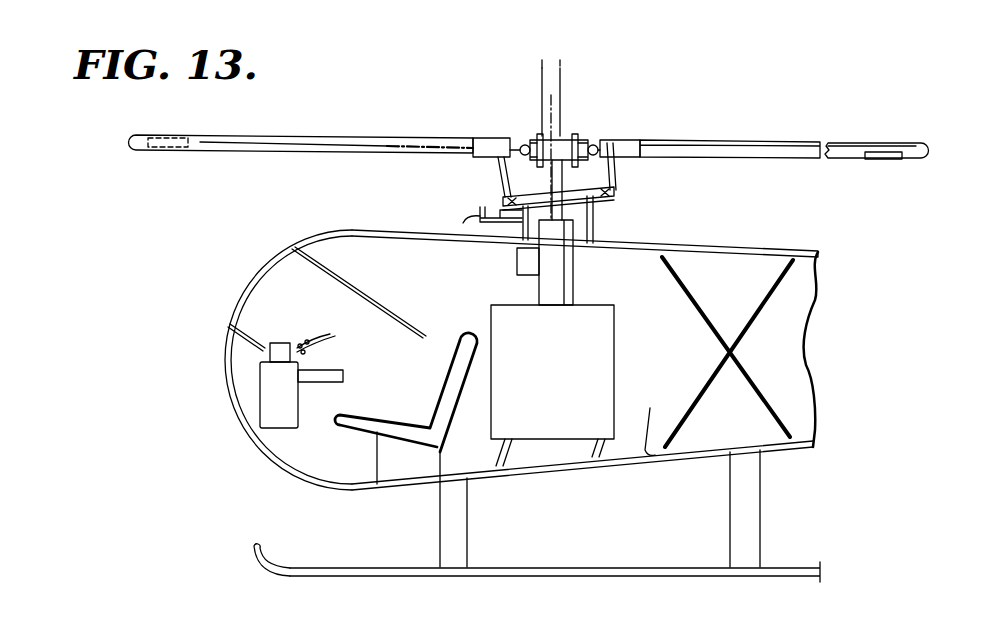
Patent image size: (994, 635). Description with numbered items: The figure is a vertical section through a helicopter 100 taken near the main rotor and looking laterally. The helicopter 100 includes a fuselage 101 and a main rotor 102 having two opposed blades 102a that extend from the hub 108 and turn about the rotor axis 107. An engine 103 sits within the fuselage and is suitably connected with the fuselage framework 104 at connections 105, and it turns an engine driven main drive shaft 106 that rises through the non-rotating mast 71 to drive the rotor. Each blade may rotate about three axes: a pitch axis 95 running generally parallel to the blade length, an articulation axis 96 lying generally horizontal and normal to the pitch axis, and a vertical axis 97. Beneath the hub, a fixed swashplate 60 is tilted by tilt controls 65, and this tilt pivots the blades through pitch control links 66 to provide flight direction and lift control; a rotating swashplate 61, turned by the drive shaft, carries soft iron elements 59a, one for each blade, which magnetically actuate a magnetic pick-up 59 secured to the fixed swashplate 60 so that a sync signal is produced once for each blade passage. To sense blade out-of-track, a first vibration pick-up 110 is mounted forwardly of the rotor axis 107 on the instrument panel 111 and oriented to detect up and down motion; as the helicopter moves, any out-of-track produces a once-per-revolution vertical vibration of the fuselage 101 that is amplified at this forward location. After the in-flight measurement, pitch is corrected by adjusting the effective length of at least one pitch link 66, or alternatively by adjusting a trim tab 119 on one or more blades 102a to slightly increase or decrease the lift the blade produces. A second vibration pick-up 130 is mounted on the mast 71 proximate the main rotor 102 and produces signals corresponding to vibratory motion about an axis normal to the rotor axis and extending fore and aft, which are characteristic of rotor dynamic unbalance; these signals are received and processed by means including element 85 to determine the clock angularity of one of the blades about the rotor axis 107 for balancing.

The helicopter 100 is at (200, 337).
The fuselage 101 is at (768, 238).
The main rotor 102 is at (657, 110).
The blades 102a is at (262, 136).
The trim tab 119 is at (163, 152).
The pitch axis 95 is at (397, 147).
The pitch control links 66 is at (488, 152).
The hub 108 is at (550, 134).
The vertical axis 97 is at (540, 90).
The rotor axis 107 is at (597, 70).
The articulation axis 96 is at (594, 145).
The main drive shaft 106 is at (563, 178).
The fixed swashplate 60 is at (600, 214).
The rotating swashplate 61 is at (617, 194).
The tilt controls 65 is at (520, 226).
The magnetic pick-up 59 is at (478, 209).
The soft iron elements 59a is at (503, 198).
The second vibration pick-up 130 is at (516, 266).
The non-rotating mast 71 is at (553, 283).
The engine 103 is at (552, 372).
The fuselage framework 104 is at (650, 408).
The engine connection 105 is at (513, 460).
The first vibration pick-up 110 is at (277, 343).
The instrument panel 111 is at (278, 403).
The signal processing means 85 is at (338, 370).